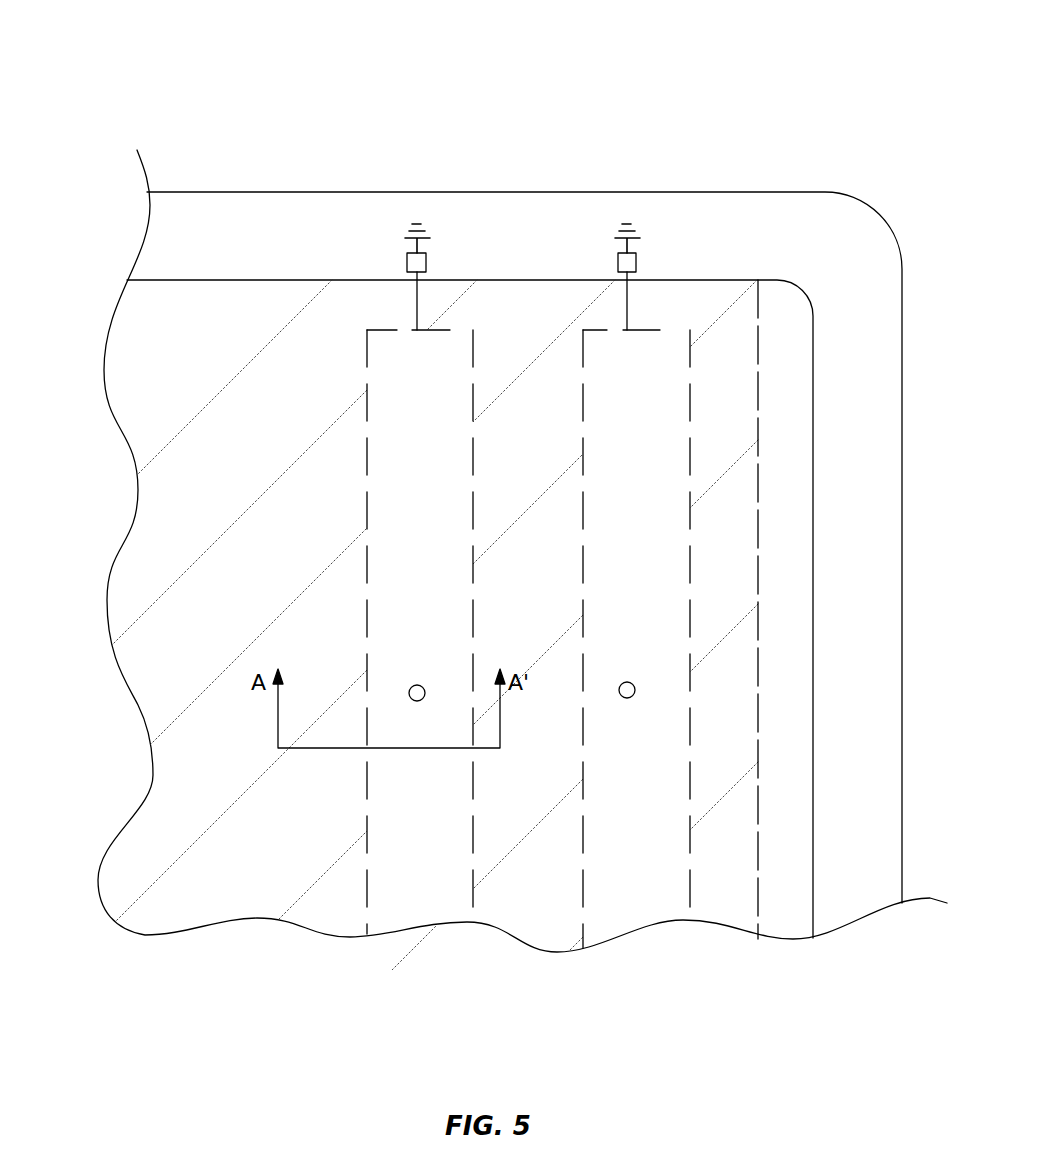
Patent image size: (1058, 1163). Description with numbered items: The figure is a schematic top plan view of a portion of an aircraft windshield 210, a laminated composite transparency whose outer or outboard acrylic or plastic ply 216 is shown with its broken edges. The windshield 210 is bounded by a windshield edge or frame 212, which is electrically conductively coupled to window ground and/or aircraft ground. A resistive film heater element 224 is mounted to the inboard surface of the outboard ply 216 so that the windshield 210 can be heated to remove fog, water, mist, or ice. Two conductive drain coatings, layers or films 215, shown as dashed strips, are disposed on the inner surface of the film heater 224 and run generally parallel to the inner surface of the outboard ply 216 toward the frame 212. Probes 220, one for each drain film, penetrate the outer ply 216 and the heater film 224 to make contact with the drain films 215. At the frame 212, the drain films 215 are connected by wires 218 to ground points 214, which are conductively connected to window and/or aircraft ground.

The windshield 210 is at (805, 78).
The windshield edge or frame 212 is at (265, 228).
The ground points 214 is at (615, 258).
The conductive drain coatings, layers or films 215 is at (428, 905).
The outer or outboard acrylic or plastic ply 216 is at (172, 500).
The wires 218 is at (415, 312).
The probes 220 is at (409, 697).
The resistive film heater element 224 is at (722, 395).